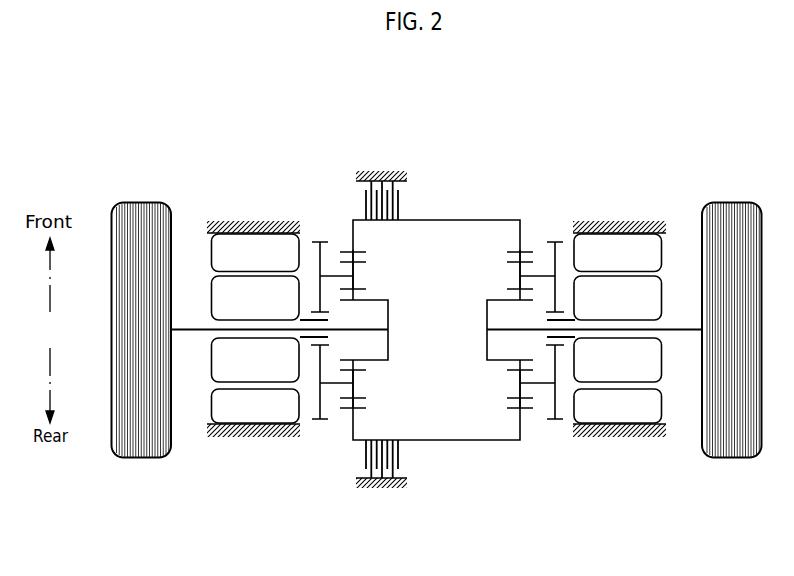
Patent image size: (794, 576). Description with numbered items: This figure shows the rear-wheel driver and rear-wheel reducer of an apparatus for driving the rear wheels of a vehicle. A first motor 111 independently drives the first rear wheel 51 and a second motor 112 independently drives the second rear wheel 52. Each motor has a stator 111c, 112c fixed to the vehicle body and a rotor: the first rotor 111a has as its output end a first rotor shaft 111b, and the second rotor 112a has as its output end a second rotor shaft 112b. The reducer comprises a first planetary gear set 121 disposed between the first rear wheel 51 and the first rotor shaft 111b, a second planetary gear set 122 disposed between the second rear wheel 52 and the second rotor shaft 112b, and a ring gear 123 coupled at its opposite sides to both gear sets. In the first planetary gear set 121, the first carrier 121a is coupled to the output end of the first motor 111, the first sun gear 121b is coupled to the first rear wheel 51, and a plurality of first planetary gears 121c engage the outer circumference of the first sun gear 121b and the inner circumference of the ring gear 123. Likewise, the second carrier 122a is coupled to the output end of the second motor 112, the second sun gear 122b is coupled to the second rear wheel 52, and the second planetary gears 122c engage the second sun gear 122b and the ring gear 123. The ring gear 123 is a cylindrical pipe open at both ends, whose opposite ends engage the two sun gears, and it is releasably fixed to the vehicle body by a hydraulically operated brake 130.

The first rear wheel 51 is at (143, 203).
The second rear wheel 52 is at (733, 203).
The first motor 111 is at (226, 339).
The first rotor 111a is at (211, 252).
The first rotor shaft 111b is at (308, 345).
The stator 111c is at (211, 297).
The second motor 112 is at (650, 346).
The second rotor 112a is at (662, 297).
The second rotor shaft 112b is at (567, 345).
The stator 112c is at (667, 235).
The first planetary gear set 121 is at (373, 258).
The first carrier 121a is at (305, 238).
The first sun gear 121b is at (365, 299).
The first planetary gears 121c is at (360, 250).
The second planetary gear set 122 is at (535, 255).
The second carrier 122a is at (563, 242).
The second sun gear 122b is at (490, 300).
The second planetary gears 122c is at (523, 252).
The ring gear 123 is at (437, 220).
The brake 130 is at (390, 178).